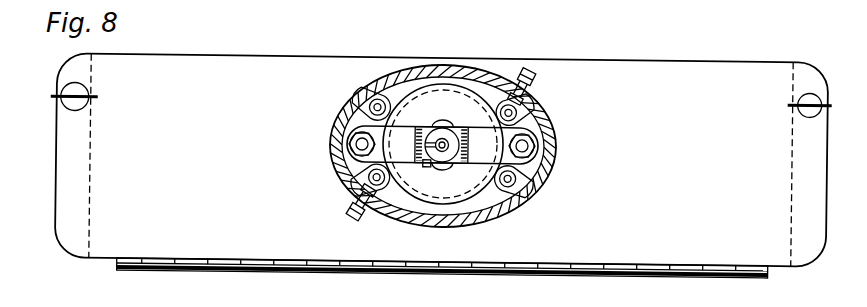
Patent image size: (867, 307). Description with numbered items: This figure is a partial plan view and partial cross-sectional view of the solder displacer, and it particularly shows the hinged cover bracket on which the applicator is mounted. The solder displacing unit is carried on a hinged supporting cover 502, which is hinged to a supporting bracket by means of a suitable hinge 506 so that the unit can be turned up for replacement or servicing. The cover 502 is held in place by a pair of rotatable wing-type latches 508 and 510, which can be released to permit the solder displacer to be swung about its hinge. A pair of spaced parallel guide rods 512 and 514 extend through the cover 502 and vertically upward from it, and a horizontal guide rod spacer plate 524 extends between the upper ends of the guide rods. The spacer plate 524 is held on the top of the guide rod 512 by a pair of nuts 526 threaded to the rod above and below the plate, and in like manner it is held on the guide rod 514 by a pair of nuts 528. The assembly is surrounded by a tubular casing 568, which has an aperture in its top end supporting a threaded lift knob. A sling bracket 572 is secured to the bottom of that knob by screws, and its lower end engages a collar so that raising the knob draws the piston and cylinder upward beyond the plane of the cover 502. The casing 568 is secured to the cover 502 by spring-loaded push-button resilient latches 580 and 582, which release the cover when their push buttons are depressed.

The hinged supporting cover 502 is at (745, 142).
The hinge 506 is at (712, 276).
The rotatable wing-type latch 508 is at (802, 100).
The rotatable wing-type latch 510 is at (92, 97).
The guide rod 512 is at (347, 158).
The guide rod 514 is at (542, 128).
The guide rod spacer plate 524 is at (405, 132).
The nuts 526 is at (352, 146).
The nuts 528 is at (537, 145).
The tubular casing 568 is at (527, 196).
The sling bracket 572 is at (472, 132).
The push button resilient latch 580 is at (532, 70).
The push button resilient latch 582 is at (348, 213).